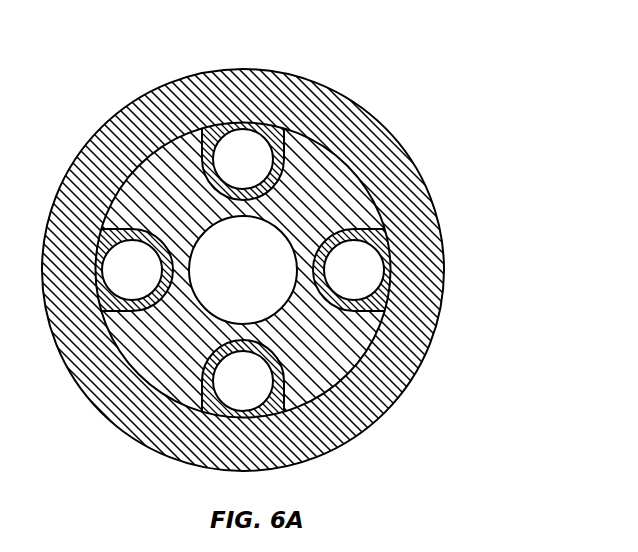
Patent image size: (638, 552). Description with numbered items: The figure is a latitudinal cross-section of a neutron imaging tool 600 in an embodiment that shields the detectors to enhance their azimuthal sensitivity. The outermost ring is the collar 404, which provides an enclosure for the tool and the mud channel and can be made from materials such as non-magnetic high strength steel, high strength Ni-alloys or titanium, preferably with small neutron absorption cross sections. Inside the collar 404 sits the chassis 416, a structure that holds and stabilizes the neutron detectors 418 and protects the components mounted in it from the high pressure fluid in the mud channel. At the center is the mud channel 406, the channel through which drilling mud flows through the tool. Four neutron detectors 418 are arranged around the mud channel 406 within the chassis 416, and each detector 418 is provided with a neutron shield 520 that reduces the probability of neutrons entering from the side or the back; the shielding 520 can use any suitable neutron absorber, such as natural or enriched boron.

The neutron imaging tool 600 is at (477, 75).
The collar 404 is at (400, 173).
The chassis 416 is at (168, 178).
The neutron detectors 418 is at (319, 244).
The mud channel 406 is at (268, 282).
The neutron shield 520 is at (197, 373).